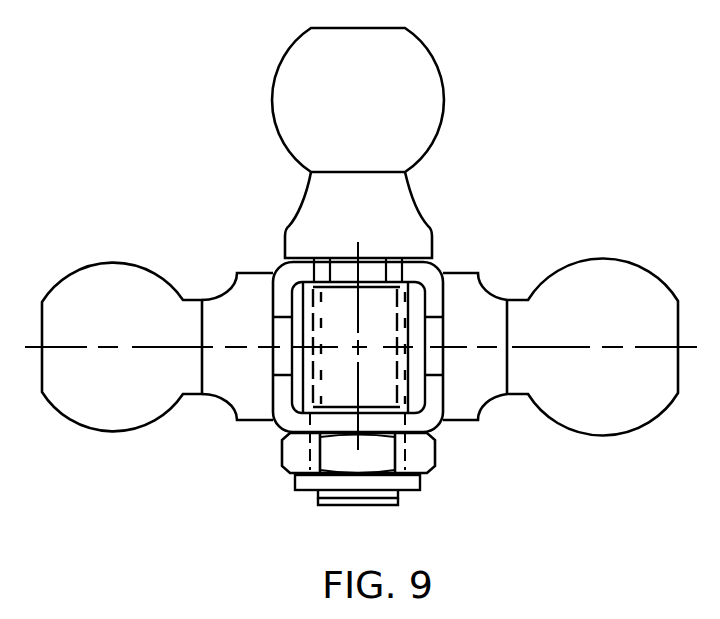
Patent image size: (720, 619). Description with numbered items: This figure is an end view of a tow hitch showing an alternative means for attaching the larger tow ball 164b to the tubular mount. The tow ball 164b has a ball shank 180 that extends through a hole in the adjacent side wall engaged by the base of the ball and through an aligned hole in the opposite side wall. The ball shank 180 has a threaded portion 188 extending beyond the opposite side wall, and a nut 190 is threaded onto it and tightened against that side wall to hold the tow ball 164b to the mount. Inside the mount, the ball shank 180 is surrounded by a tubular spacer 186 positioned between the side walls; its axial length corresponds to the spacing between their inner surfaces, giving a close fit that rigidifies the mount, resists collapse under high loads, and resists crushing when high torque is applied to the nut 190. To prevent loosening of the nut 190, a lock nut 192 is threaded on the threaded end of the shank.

The tow ball 164b is at (444, 102).
The tubular spacer 186 is at (294, 301).
The nut 190 is at (281, 453).
The lock nut 192 is at (422, 482).
The threaded portion 188 is at (317, 493).
The ball shank 180 is at (370, 505).